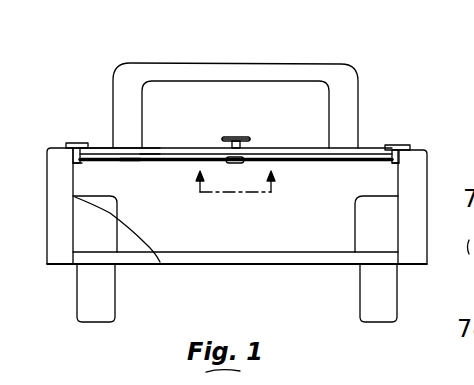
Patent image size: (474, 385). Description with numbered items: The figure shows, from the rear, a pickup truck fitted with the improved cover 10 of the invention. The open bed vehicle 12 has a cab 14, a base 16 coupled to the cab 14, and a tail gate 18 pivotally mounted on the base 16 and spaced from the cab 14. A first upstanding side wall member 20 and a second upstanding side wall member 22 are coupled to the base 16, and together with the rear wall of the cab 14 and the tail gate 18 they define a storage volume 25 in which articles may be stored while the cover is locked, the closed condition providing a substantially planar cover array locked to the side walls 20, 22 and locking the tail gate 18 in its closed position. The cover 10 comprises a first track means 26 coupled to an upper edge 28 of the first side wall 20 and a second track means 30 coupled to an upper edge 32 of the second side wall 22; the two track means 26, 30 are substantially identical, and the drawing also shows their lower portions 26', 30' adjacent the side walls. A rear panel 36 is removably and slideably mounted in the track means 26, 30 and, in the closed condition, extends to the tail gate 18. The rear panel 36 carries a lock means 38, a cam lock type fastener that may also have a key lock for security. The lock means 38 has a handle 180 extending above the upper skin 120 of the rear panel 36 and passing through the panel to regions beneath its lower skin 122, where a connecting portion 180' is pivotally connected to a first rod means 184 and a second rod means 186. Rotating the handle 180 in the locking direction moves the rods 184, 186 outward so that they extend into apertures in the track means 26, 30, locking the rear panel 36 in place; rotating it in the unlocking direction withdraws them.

The cover 10 is at (378, 124).
The open bed vehicle 12 is at (323, 62).
The cab 14 is at (254, 62).
The base 16 is at (310, 252).
The tail gate 18 is at (138, 253).
The first upstanding side wall member 20 is at (46, 245).
The second upstanding side wall member 22 is at (427, 246).
The storage volume 25 is at (240, 237).
The first track means 26 is at (82, 120).
The left bracket foot 26' is at (96, 177).
The upper edge of first side wall 28 is at (54, 147).
The second track means 30 is at (409, 128).
The right bracket foot 30' is at (378, 178).
The upper edge of second side wall 32 is at (418, 149).
The rear panel 36 is at (277, 147).
The lock means 38 is at (230, 137).
The upper skin 120 is at (133, 147).
The lower skin 122 is at (137, 163).
The handle 180 is at (255, 112).
The connecting portion 180' is at (267, 191).
The first rod means 184 is at (150, 163).
The second rod means 186 is at (320, 162).